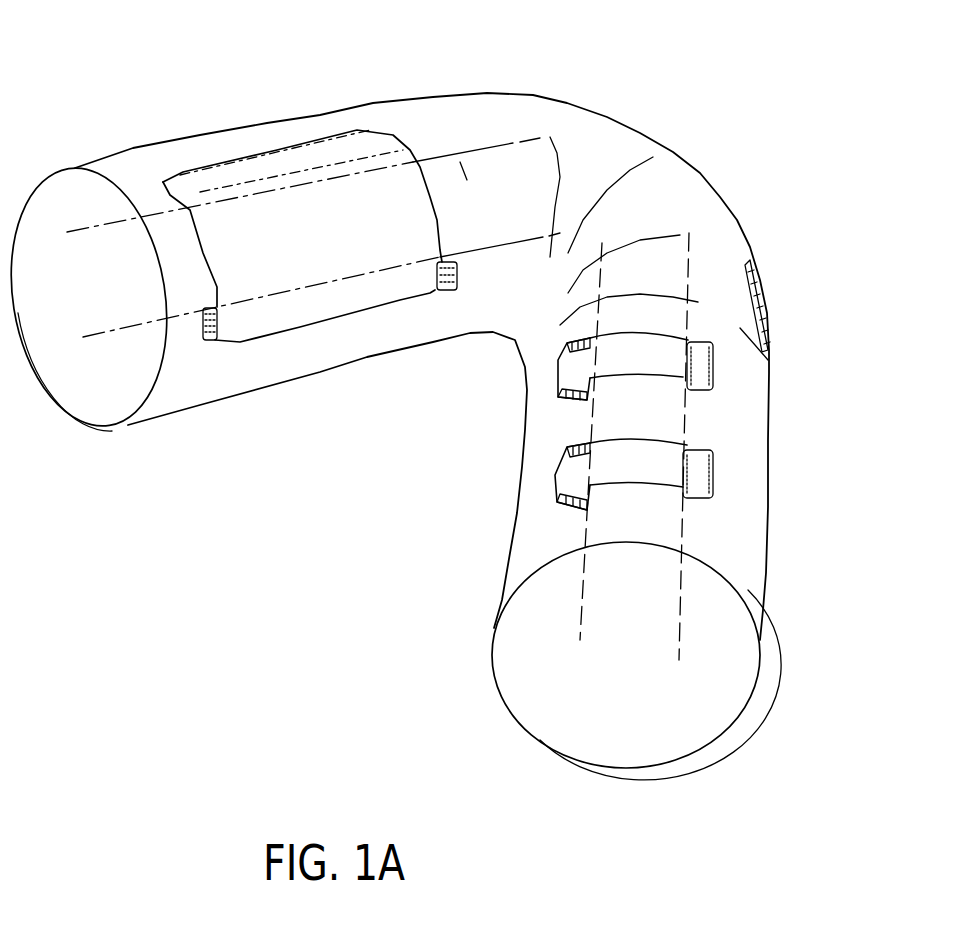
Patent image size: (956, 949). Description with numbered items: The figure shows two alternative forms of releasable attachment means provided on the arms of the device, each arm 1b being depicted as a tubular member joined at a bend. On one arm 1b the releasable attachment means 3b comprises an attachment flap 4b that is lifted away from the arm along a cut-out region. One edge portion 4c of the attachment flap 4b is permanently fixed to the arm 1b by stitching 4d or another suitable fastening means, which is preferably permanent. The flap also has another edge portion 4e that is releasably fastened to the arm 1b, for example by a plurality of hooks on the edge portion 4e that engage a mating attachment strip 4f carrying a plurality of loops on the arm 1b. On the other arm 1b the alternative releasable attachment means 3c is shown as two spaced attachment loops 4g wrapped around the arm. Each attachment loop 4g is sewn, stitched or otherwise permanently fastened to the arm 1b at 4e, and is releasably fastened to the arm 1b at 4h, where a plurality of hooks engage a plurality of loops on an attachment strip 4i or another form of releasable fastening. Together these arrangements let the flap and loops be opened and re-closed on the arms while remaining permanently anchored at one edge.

The arm 1b is at (240, 382).
The releasable attachment means 3b is at (285, 140).
The releasable attachment means 3c is at (733, 427).
The attachment flap 4b is at (297, 165).
The edge portion 4c is at (215, 177).
The stitching 4d is at (343, 150).
The edge portion 4e is at (370, 293).
The attachment strip 4f is at (442, 292).
The attachment loops 4g is at (635, 347).
The releasable fastening location 4h is at (570, 380).
The attachment strip 4i is at (568, 403).